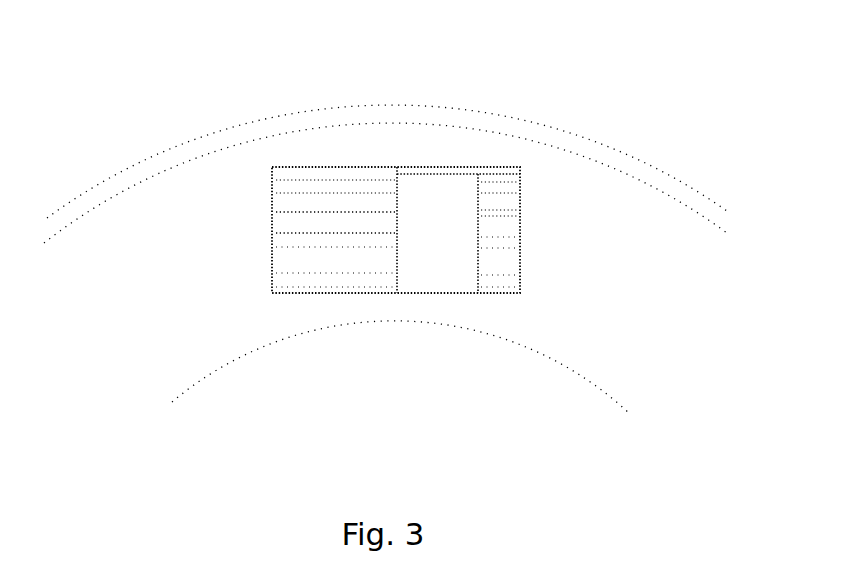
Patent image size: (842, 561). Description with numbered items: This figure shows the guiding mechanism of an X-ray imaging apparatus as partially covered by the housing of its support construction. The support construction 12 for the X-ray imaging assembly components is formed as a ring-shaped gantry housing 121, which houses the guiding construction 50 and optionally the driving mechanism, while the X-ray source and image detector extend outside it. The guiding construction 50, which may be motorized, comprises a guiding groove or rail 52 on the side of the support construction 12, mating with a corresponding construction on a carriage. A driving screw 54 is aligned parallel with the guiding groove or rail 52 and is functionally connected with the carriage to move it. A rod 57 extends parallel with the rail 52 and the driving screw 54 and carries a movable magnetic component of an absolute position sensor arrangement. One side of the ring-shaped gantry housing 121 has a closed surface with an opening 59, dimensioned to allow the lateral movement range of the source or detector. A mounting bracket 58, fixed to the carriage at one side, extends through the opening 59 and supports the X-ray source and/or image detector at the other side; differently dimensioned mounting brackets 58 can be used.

The support construction 12 is at (137, 132).
The housing 121 is at (622, 160).
The guiding construction 50 is at (292, 152).
The guiding groove or rail 52 is at (367, 189).
The driving screw 54 is at (290, 242).
The rod 57 is at (287, 212).
The mounting bracket 58 is at (448, 203).
The opening 59 is at (523, 280).